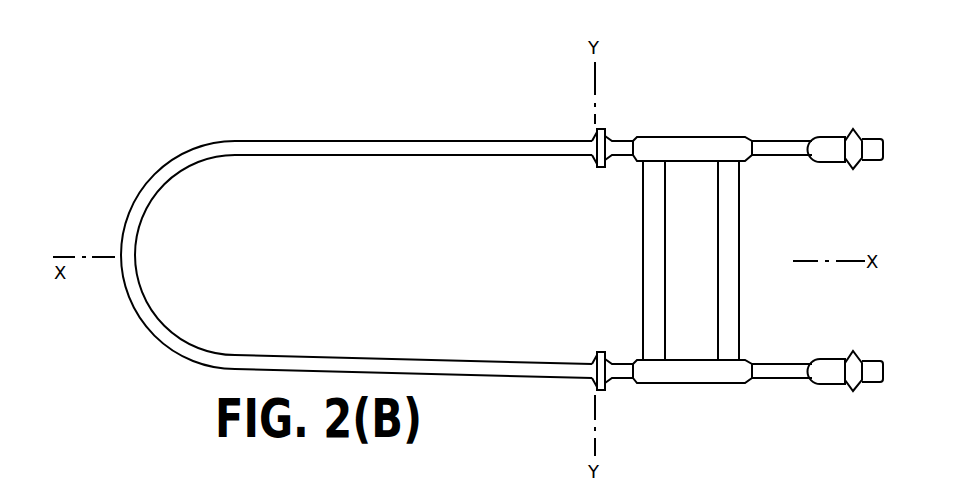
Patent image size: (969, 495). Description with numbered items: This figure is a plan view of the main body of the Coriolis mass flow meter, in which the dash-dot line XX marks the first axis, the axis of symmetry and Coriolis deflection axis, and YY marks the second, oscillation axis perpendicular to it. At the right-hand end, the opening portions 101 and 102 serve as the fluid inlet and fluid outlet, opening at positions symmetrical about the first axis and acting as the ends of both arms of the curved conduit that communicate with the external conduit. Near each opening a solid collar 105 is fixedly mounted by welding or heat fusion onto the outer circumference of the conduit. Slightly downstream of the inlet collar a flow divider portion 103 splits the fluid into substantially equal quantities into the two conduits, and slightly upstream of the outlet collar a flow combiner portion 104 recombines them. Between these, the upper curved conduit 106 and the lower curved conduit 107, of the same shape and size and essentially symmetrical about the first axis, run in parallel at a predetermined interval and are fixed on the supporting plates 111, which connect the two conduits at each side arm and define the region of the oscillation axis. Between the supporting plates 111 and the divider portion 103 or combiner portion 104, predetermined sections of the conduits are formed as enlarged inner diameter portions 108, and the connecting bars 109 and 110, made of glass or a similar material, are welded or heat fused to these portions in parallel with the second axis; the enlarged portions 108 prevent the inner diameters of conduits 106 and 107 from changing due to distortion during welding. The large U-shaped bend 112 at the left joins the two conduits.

The opening portion 101 is at (875, 160).
The opening portion 102 is at (875, 382).
The flow divider portion 103 is at (807, 378).
The flow combiner portion 104 is at (807, 148).
The collar 105 is at (850, 133).
The upper curved conduit 106 is at (333, 231).
The lower curved conduit 107 is at (333, 231).
The enlarged inner diameter portion 108 is at (683, 140).
The connecting bar 109 is at (737, 290).
The connecting bar 110 is at (662, 288).
The supporting plate 111 is at (605, 128).
The U-bend 112 is at (135, 305).